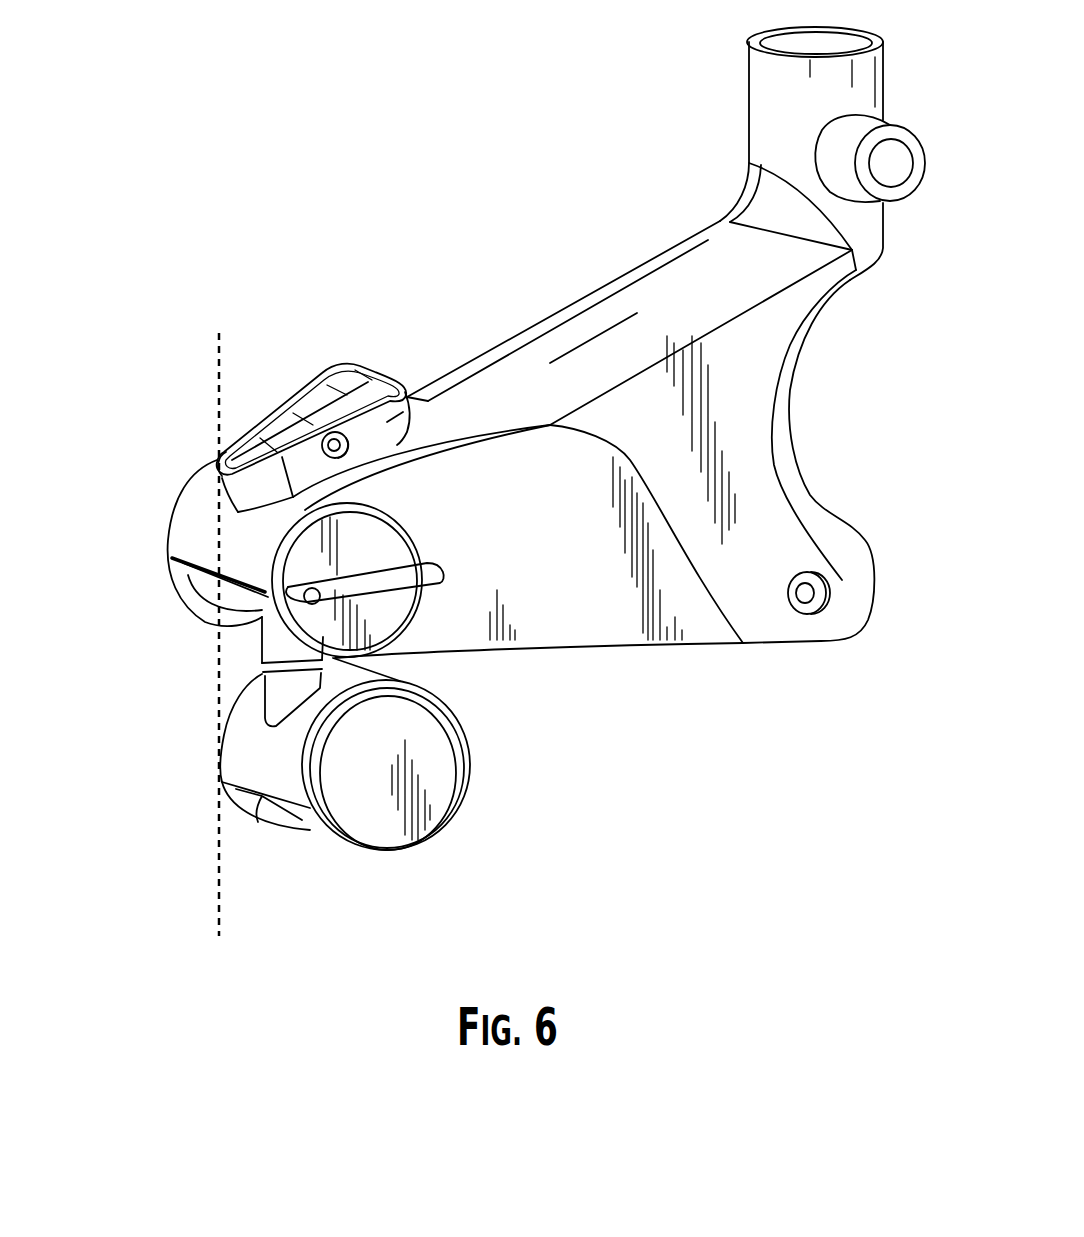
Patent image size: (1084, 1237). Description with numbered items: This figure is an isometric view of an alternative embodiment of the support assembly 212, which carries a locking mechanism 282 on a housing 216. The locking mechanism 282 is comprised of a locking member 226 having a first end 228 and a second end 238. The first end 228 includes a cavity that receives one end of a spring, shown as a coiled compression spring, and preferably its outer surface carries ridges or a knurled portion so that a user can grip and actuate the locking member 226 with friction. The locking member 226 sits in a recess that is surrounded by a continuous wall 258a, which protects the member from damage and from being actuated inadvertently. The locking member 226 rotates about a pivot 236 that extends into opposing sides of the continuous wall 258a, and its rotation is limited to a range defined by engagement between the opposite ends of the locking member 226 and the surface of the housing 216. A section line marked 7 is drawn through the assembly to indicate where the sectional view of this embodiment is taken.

The support assembly 212 is at (666, 335).
The housing 216 is at (455, 577).
The locking member 226 is at (312, 375).
The first end 228 is at (316, 345).
The locking mechanism 282 is at (313, 355).
The second end 238 is at (154, 454).
The continuous wall 258a is at (459, 330).
The pivot 236 is at (425, 486).
The section line 7- 7 is at (166, 625).